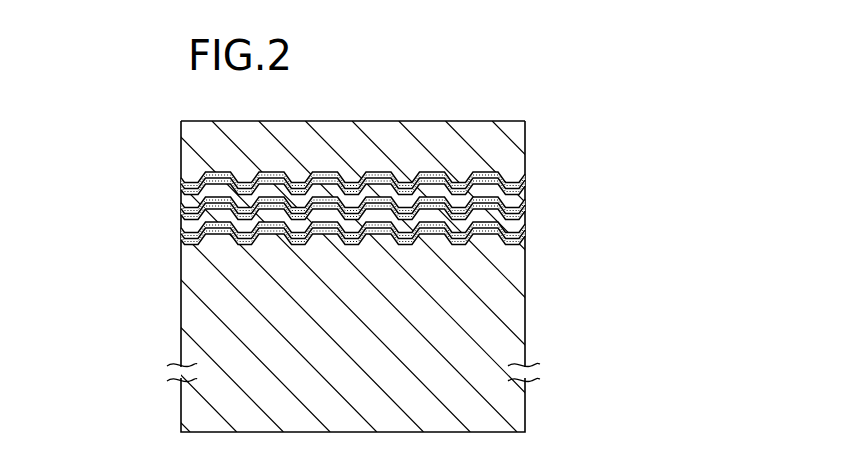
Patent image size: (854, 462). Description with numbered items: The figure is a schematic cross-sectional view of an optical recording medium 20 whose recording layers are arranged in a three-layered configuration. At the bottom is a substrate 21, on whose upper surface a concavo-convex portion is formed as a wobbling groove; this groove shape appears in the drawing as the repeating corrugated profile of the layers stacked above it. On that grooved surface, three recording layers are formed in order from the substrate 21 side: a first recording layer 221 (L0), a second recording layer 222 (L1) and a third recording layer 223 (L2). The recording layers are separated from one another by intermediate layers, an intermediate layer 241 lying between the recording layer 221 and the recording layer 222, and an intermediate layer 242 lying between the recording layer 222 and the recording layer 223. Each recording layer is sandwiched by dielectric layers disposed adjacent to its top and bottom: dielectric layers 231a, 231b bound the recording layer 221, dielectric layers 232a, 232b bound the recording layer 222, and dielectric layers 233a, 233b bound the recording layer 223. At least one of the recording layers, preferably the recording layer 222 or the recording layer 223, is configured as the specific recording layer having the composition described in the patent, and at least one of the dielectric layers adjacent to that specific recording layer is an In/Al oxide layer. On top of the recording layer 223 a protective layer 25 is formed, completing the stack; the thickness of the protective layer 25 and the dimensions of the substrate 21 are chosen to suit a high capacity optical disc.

The optical recording medium 20 is at (564, 104).
The substrate 21 is at (510, 312).
The protective layer 25 is at (514, 131).
The recording layer 223 is at (397, 175).
The recording layer 222 is at (369, 208).
The recording layer 221 is at (397, 254).
The intermediate layer 242 is at (527, 196).
The intermediate layer 241 is at (527, 222).
The dielectric layer 233b is at (183, 176).
The dielectric layer 233a is at (183, 188).
The dielectric layer 232b is at (183, 206).
The dielectric layer 232a is at (183, 214).
The dielectric layer 231b is at (183, 232).
The dielectric layer 231a is at (183, 242).